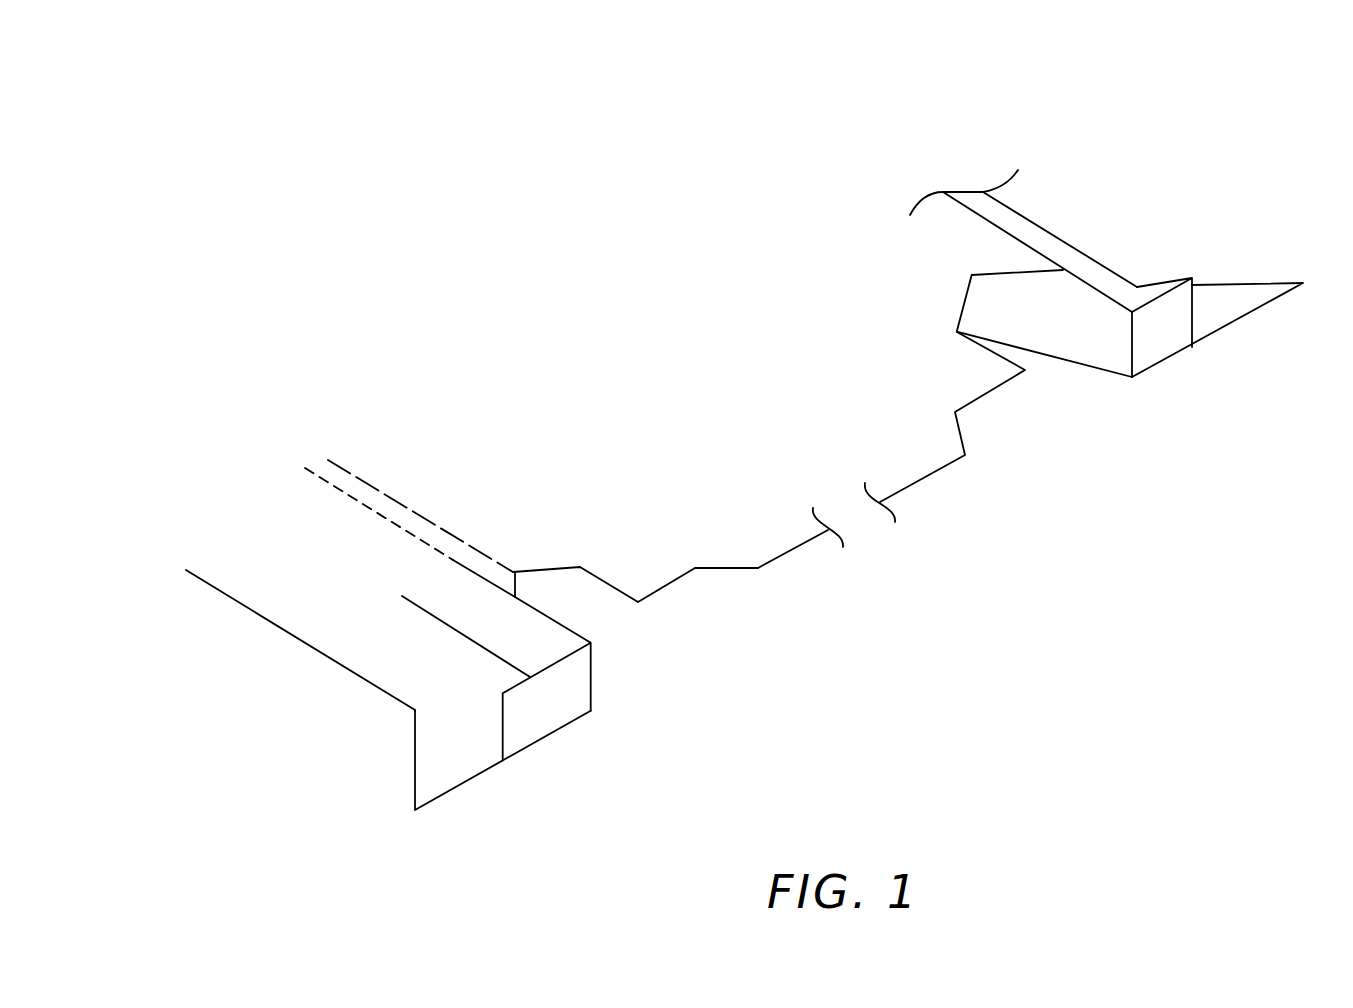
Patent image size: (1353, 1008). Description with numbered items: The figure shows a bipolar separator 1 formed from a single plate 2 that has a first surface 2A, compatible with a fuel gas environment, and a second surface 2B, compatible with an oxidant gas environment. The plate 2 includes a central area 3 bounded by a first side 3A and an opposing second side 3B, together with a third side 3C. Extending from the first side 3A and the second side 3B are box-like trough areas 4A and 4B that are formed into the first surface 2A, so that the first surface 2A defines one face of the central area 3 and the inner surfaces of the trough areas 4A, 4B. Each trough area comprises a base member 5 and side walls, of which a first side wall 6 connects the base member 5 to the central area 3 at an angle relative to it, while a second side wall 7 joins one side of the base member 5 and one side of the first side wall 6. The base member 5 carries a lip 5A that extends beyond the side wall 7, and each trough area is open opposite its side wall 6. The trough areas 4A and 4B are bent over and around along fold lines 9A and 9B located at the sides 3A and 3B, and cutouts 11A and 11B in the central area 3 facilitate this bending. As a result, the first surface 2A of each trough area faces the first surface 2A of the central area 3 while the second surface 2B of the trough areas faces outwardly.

The bipolar separator 1 is at (813, 150).
The plate 2 is at (938, 388).
The first surface 2A is at (443, 592).
The second surface 2B is at (568, 693).
The central area 3 is at (695, 518).
The first side 3A is at (455, 547).
The second side 3B is at (857, 217).
The third side 3C is at (755, 512).
The trough area 4A is at (592, 673).
The trough area 4B is at (1193, 342).
The base member 5 is at (352, 625).
The lip 5A is at (442, 750).
The first side wall 6 is at (510, 633).
The second side wall 7 is at (540, 715).
The fold line 9A is at (328, 460).
The fold line 9B is at (907, 293).
The cutout 11A is at (567, 583).
The cutout 11B is at (1008, 320).